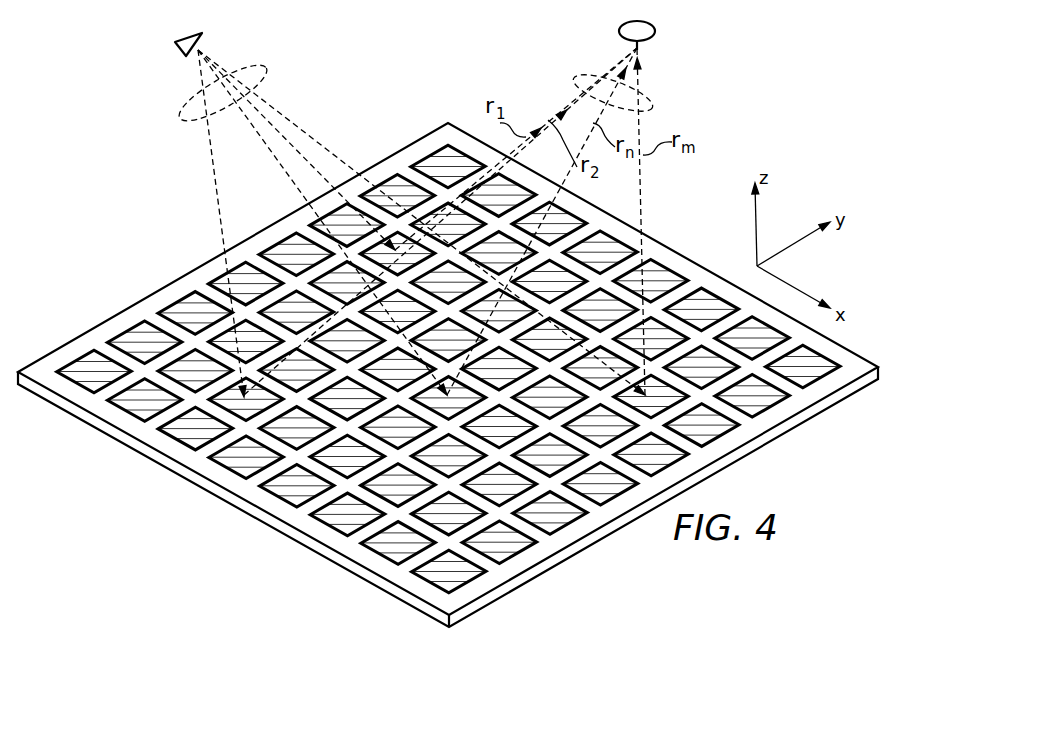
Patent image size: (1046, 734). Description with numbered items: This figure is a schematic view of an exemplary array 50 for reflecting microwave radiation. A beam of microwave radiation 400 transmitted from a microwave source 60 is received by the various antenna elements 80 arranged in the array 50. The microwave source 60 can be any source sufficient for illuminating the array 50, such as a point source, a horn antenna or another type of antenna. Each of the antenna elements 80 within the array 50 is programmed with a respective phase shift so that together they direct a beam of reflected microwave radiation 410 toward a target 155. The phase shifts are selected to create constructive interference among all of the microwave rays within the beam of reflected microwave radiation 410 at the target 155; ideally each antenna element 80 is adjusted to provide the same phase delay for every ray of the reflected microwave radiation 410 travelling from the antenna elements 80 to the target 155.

The array 50 is at (273, 522).
The antenna elements 80 is at (475, 578).
The microwave source 60 is at (176, 48).
The beam of microwave radiation 400 is at (183, 115).
The target 155 is at (661, 30).
The beam of reflected microwave radiation 410 is at (577, 78).